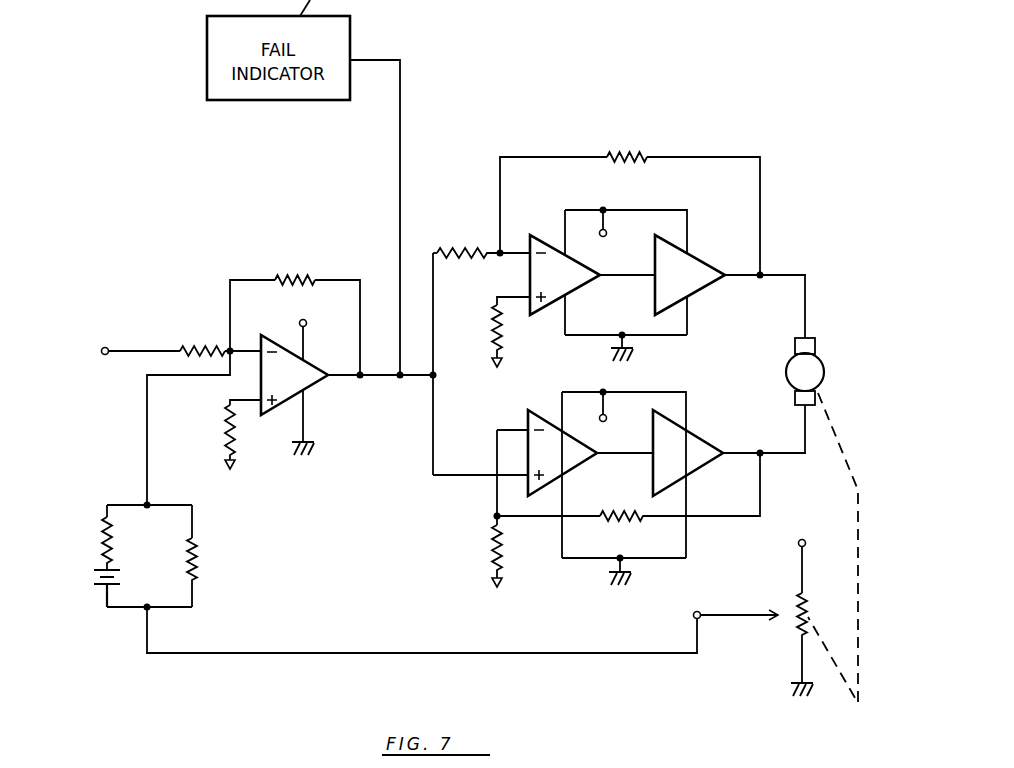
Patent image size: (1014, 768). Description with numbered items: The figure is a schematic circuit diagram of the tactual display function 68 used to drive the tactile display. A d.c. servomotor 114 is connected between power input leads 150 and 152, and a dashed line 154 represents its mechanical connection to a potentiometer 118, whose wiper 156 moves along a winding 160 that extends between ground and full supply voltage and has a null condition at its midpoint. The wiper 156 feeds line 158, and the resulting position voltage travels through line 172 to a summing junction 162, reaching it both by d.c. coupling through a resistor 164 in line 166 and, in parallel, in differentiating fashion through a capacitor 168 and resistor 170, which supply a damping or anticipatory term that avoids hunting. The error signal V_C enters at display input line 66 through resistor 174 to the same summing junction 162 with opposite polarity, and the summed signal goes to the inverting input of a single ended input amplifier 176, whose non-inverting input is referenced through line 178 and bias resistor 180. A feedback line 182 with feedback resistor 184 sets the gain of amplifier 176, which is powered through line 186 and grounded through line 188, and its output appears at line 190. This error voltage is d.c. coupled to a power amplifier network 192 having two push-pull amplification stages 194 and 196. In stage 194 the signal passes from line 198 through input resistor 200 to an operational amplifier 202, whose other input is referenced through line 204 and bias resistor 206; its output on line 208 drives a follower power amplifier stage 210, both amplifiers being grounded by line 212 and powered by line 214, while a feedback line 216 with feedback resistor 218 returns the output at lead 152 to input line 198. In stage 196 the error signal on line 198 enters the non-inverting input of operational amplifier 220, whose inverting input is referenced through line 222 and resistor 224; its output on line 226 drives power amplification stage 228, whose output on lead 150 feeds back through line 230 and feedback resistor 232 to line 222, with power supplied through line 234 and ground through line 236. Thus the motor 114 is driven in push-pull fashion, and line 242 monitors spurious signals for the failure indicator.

The display input line 66 is at (130, 353).
The tactual display function 68 is at (788, 81).
The d.c. servomotor 114 is at (830, 360).
The potentiometer 118 is at (755, 656).
The power input lead 150 is at (806, 440).
The power input lead 152 is at (806, 296).
The dashed line 154 is at (861, 535).
The wiper 156 is at (735, 612).
The line 158 is at (338, 652).
The winding 160 is at (800, 600).
The summing junction 162 is at (230, 348).
The resistor 164 is at (193, 555).
The line 166 is at (175, 607).
The capacitor 168 is at (93, 575).
The resistor 170 is at (104, 542).
The line 172 is at (147, 425).
The resistor 174 is at (192, 350).
The single ended input amplifier 176 is at (281, 345).
The line 178 is at (244, 400).
The bias resistor 180 is at (228, 432).
The feedback line 182 is at (337, 279).
The feedback resistor 184 is at (296, 276).
The line 186 is at (304, 345).
The line 188 is at (304, 423).
The output line 190 is at (399, 380).
The power amplifier network 192 is at (634, 72).
The amplification stage 194 is at (566, 135).
The amplification stage 196 is at (538, 572).
The input line 198 is at (434, 315).
The input resistor 200 is at (470, 248).
The operational amplifier 202 is at (548, 240).
The line 204 is at (499, 274).
The bias resistor 206 is at (499, 335).
The line 208 is at (632, 277).
The power amplifier stage 210 is at (698, 258).
The line 212 is at (656, 336).
The line 214 is at (630, 210).
The feedback line 216 is at (761, 197).
The feedback resistor 218 is at (630, 155).
The operational amplifier 220 is at (538, 412).
The line 222 is at (492, 495).
The resistor 224 is at (492, 548).
The line 226 is at (608, 452).
The power amplification stage 228 is at (692, 432).
The line 230 is at (761, 500).
The feedback resistor 232 is at (625, 510).
The line 234 is at (620, 391).
The line 236 is at (600, 560).
The line 242 is at (401, 144).